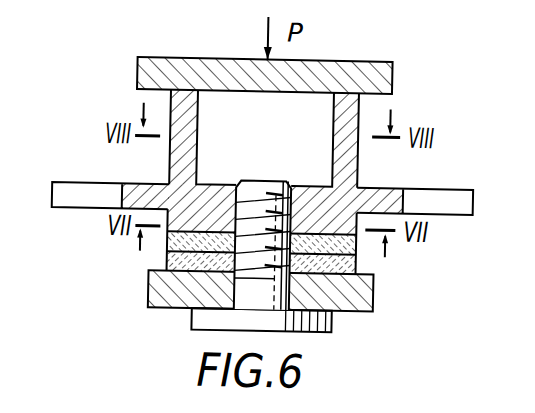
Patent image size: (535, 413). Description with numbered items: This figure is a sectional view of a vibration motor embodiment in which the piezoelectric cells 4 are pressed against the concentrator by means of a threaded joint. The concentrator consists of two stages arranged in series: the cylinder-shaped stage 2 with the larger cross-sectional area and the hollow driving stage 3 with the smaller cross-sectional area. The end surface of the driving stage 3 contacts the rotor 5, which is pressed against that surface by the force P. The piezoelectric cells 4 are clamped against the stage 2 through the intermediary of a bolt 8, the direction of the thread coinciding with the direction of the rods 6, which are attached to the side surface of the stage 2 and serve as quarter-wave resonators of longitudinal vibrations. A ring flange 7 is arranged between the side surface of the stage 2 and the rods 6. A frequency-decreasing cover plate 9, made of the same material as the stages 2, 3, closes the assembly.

The stage 2 is at (319, 197).
The driving stage 3 is at (334, 108).
The piezoelectric cell 4 is at (169, 264).
The rotor 5 is at (343, 60).
The rod 6 is at (76, 193).
The ring flange 7 is at (389, 193).
The bolt 8 is at (259, 190).
The frequency-decreasing cover plate 9 is at (371, 295).